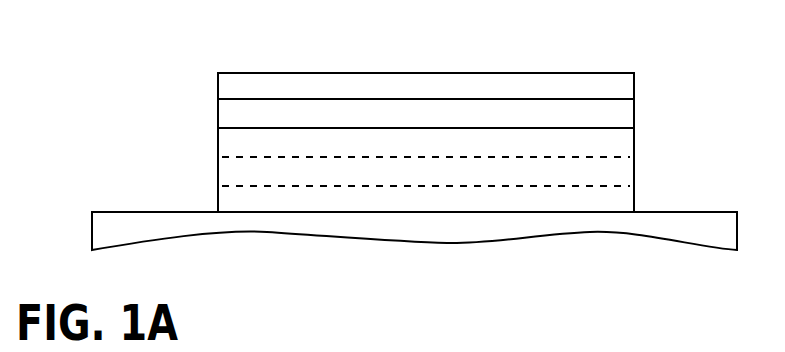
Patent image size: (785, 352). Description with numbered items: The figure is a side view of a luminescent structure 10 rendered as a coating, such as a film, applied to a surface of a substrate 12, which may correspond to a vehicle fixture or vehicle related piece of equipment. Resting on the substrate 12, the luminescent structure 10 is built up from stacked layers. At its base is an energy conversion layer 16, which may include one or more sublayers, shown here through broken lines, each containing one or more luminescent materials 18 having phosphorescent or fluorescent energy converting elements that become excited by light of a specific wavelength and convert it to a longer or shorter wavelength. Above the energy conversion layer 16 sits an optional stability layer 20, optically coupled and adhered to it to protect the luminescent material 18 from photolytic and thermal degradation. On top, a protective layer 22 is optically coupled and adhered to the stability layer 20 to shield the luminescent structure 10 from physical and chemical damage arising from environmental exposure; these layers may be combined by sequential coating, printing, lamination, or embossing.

The luminescent structure 10 is at (571, 49).
The substrate 12 is at (679, 212).
The energy conversion layer 16 is at (218, 168).
The luminescent material 18 is at (588, 171).
The stability layer 20 is at (218, 116).
The protective layer 22 is at (310, 73).